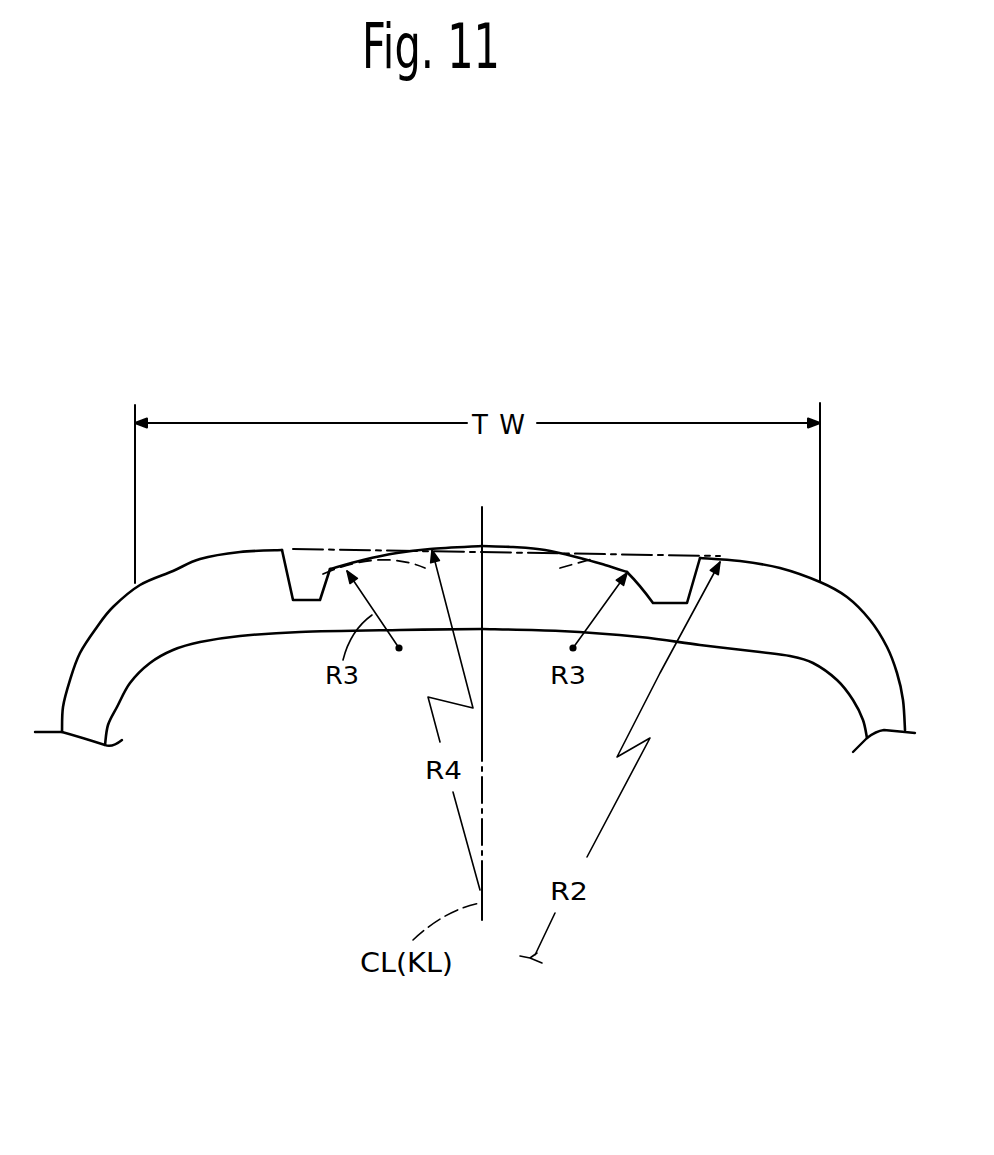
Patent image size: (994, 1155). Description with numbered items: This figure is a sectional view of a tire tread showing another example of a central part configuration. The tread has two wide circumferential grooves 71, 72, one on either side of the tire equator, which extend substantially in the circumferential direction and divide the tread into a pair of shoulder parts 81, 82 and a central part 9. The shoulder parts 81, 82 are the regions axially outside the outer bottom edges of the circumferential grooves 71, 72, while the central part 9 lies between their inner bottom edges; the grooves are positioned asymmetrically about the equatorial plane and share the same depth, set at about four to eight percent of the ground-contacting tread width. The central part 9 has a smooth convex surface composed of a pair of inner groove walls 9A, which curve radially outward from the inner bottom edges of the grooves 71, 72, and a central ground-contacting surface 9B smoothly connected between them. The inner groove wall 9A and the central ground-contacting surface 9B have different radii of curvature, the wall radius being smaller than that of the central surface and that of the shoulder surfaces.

The central part 9 is at (506, 507).
The inner groove wall 9A is at (328, 572).
The central ground-contacting surface 9B is at (513, 546).
The circumferential groove 71 is at (287, 549).
The circumferential groove 72 is at (662, 557).
The shoulder part 81 is at (187, 552).
The shoulder part 82 is at (760, 553).